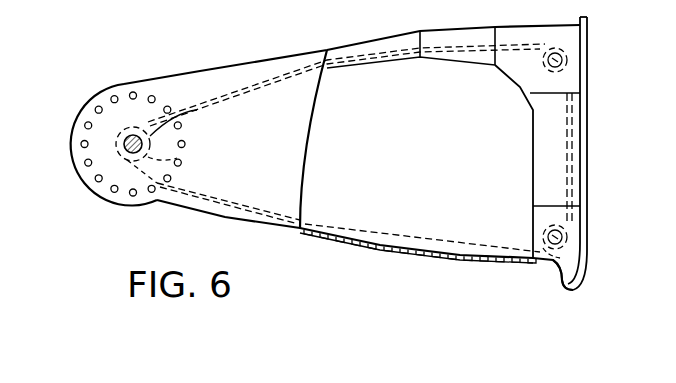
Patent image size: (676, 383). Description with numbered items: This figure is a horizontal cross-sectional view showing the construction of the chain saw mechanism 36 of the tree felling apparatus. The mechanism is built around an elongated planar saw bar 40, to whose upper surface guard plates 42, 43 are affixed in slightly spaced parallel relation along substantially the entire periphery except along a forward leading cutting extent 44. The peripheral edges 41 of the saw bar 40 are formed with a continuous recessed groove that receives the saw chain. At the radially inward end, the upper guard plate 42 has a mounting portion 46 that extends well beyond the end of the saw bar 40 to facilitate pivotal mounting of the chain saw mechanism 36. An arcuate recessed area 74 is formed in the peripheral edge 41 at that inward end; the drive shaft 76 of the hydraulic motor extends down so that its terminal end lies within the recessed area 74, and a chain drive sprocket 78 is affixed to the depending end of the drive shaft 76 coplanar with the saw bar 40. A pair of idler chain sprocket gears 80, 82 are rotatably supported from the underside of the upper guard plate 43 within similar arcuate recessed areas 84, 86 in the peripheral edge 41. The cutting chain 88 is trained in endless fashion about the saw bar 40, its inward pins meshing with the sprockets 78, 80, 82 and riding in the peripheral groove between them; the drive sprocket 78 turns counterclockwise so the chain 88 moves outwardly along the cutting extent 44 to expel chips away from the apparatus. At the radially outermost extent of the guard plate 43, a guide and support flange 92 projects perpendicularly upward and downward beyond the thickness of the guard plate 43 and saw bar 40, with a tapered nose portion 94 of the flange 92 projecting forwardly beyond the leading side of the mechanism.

The chain saw mechanism 36 is at (128, 215).
The saw bar 40 is at (438, 153).
The peripheral edges 41 is at (237, 84).
The upper guard plate 42 is at (274, 197).
The upper guard plate 43 is at (550, 143).
The forward leading cutting extent 44 is at (393, 257).
The mounting portion 46 is at (108, 126).
The arcuate recessed area 74 is at (190, 151).
The drive shaft 76 is at (197, 110).
The chain drive sprocket 78 is at (122, 146).
The idler chain sprocket gear 80 is at (572, 56).
The idler chain sprocket gear 82 is at (572, 236).
The arcuate recessed area 84 is at (542, 67).
The arcuate recessed area 86 is at (537, 233).
The cutting chain 88 is at (460, 263).
The guide and support flange 92 is at (588, 148).
The tapered nose portion 94 is at (572, 292).